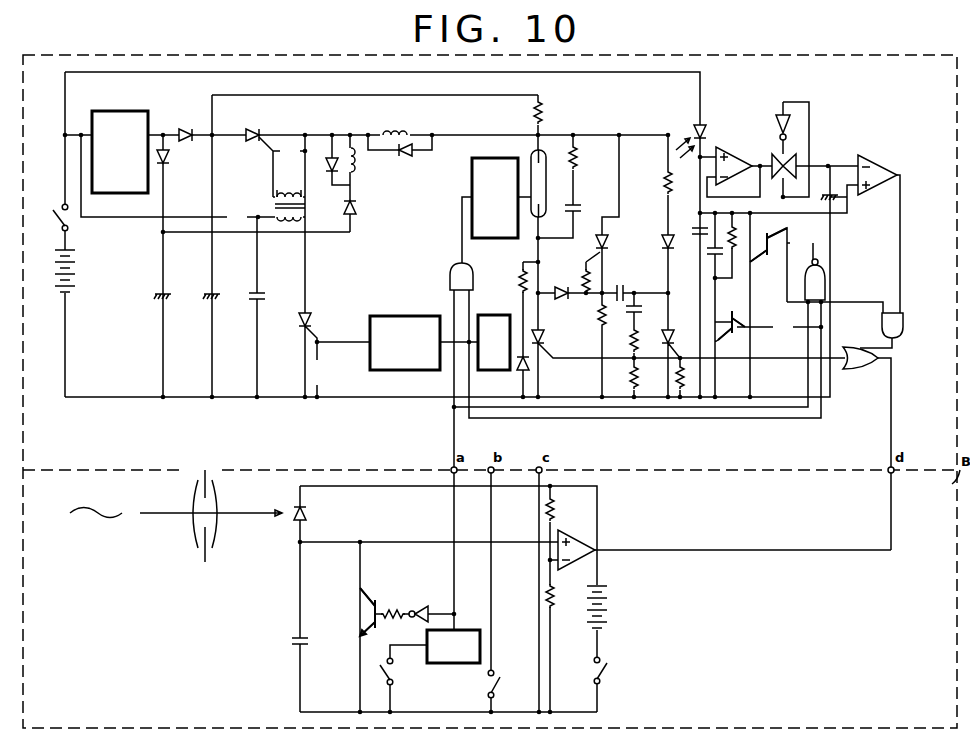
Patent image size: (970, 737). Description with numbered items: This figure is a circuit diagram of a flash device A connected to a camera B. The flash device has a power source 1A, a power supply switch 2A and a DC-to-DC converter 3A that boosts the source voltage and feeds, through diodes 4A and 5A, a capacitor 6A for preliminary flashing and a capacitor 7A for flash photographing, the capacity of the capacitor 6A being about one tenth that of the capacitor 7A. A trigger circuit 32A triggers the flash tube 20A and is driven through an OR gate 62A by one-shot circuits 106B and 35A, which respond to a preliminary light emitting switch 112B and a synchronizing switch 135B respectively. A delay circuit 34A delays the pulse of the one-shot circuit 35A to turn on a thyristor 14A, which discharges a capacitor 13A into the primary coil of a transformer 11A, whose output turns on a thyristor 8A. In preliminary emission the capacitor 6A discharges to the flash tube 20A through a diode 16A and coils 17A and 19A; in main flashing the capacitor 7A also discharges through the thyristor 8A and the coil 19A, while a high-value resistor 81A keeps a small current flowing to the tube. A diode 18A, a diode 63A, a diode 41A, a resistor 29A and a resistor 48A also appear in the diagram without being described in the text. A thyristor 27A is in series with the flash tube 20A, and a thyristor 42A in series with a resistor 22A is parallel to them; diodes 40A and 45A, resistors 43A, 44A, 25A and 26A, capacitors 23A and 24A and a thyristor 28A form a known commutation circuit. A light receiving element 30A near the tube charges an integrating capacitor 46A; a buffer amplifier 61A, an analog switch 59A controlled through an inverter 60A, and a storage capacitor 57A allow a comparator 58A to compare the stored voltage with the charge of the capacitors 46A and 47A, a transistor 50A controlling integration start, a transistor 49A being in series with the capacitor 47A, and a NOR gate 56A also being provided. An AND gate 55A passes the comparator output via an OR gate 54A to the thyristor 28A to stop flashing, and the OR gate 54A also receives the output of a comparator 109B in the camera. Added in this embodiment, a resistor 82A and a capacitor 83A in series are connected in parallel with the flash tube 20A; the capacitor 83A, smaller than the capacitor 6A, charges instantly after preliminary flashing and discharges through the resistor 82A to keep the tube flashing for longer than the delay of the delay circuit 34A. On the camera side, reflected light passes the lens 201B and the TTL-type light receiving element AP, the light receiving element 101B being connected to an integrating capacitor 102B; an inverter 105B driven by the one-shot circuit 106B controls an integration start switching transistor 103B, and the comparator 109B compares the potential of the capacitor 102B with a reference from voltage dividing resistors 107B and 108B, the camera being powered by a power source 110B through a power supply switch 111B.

The power source 1A is at (78, 268).
The power supply switch 2A is at (55, 216).
The DC-to-DC converter 3A is at (132, 111).
The diode 4A is at (185, 128).
The diode 5A is at (170, 157).
The capacitor for preliminary flashing 6A is at (155, 295).
The capacitor for flash photographing 7A is at (204, 295).
The thyristor 8A is at (250, 128).
The transformer 11A is at (306, 206).
The capacitor 13A is at (250, 292).
The thyristor 14A is at (298, 320).
The diode 16A is at (357, 206).
The coil 17A is at (357, 166).
The diode 18A is at (408, 158).
The coil 19A is at (396, 130).
The flash tube 20A is at (531, 160).
The resistor 22A is at (596, 315).
The capacitor 23A is at (620, 285).
The capacitor 24A is at (640, 302).
The resistor 25A is at (640, 340).
The resistor 26A is at (640, 374).
The thyristor 27A is at (546, 337).
The thyristor 28A is at (674, 334).
The resistor 29A is at (684, 384).
The light receiving element 30A is at (706, 128).
The trigger circuit 32A is at (472, 172).
The delay circuit 34A is at (380, 316).
The one-shot circuit 35A is at (495, 315).
The diode 40A is at (562, 300).
The diode 41A is at (662, 238).
The thyristor 42A is at (609, 242).
The resistor 43A is at (580, 279).
The resistor 44A is at (518, 278).
The diode 45A is at (530, 368).
The integrating capacitor 46A is at (693, 228).
The capacitor 47A is at (707, 252).
The resistor 48A is at (738, 236).
The transistor 49A is at (733, 306).
The transistor 50A is at (766, 258).
The OR gate 54A is at (854, 347).
The AND gate 55A is at (903, 328).
The NOR gate 56A is at (826, 275).
The storage capacitor 57A is at (838, 202).
The comparator 58A is at (882, 158).
The analog switch 59A is at (796, 160).
The inverter 60A is at (779, 118).
The buffer amplifier 61A is at (736, 158).
The OR gate 62A is at (450, 282).
The diode 63A is at (330, 158).
The resistor 81A is at (544, 112).
The resistor 82A is at (579, 160).
The capacitor 83A is at (581, 206).
The light receiving element AP is at (203, 466).
The photo-taking lens 201B is at (218, 540).
The light receiving element 101B is at (307, 512).
The capacitor 102B is at (292, 641).
The integration start switching transistor 103B is at (370, 615).
The inverter 105B is at (420, 604).
The one-shot circuit 106B is at (466, 628).
The voltage dividing resistor 107B is at (555, 510).
The voltage dividing resistor 108B is at (545, 595).
The comparator 109B is at (580, 540).
The power source 110B is at (610, 606).
The power supply switch 111B is at (606, 673).
The preliminary light emitting switch 112B is at (396, 674).
The synchronizing switch 135B is at (500, 680).